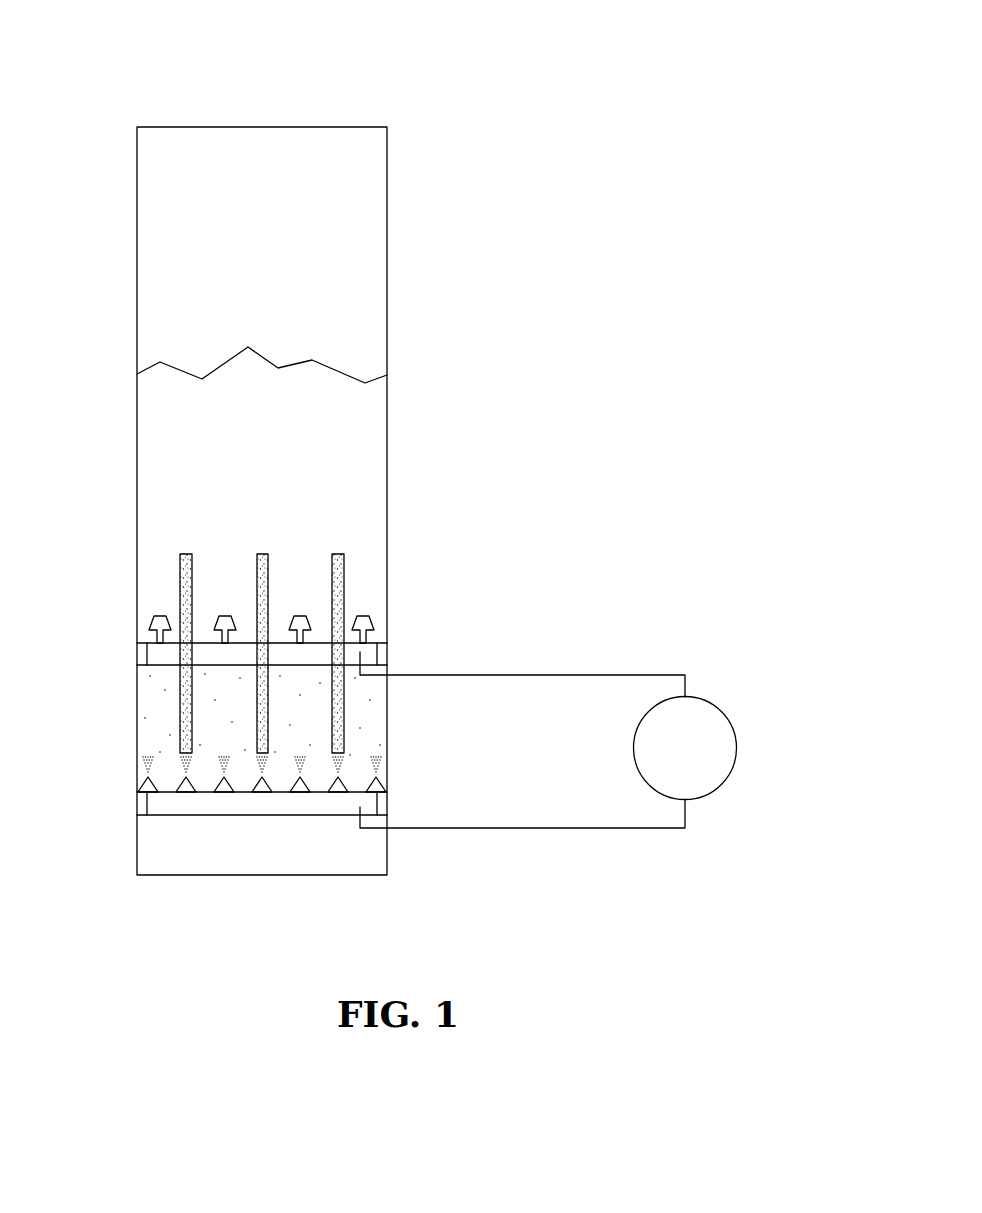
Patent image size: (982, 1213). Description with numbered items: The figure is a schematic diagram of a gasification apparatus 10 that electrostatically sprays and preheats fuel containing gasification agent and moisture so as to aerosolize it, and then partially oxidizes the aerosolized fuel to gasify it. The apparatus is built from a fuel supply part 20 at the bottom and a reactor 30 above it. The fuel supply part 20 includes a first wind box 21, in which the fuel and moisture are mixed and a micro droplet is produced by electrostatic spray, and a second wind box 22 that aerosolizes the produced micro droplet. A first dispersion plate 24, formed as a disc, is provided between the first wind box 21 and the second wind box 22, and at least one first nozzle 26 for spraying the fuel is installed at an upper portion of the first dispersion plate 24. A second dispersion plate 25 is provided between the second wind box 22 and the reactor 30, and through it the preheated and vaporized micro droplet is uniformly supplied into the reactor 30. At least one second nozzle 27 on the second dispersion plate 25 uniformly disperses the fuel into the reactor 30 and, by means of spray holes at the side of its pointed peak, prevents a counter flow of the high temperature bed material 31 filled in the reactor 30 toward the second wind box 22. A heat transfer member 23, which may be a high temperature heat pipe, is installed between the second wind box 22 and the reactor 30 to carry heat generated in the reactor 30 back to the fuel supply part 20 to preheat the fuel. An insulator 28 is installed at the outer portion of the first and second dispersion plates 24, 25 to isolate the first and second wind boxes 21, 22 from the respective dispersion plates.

The gasification apparatus 10 is at (75, 42).
The fuel supply part 20 is at (418, 635).
The first wind box 21 is at (137, 853).
The second wind box 22 is at (137, 700).
The heat transfer member 23 is at (344, 572).
The first dispersion plate 24 is at (335, 803).
The second dispersion plate 25 is at (160, 655).
The first nozzle 26 is at (178, 784).
The second nozzle 27 is at (152, 627).
The insulator 28 is at (380, 650).
The reactor 30 is at (387, 234).
The high temperature bed material 31 is at (163, 412).